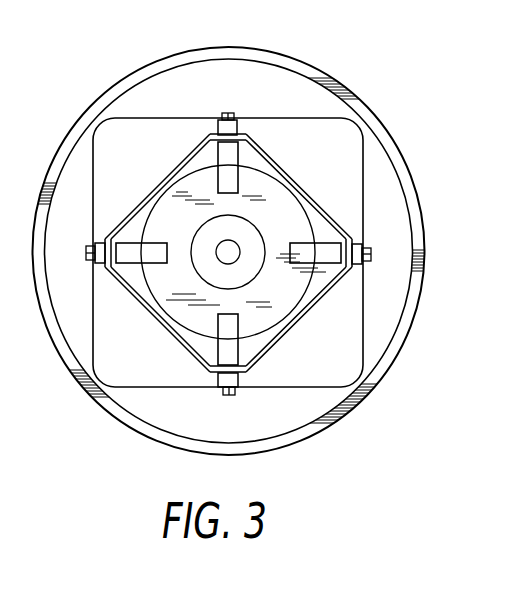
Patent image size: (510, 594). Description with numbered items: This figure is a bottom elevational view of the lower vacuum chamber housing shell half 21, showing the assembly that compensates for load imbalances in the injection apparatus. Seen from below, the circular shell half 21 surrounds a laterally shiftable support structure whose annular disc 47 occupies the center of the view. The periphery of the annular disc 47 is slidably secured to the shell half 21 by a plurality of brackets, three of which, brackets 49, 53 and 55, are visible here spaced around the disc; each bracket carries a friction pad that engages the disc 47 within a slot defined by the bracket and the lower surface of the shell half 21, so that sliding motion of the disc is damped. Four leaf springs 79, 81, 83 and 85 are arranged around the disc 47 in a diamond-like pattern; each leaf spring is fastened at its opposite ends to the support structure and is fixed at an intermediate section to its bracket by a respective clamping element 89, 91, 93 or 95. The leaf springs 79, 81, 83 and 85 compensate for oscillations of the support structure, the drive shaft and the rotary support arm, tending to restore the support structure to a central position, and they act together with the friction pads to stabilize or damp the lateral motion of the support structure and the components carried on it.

The vacuum chamber shell half 21 is at (393, 318).
The annular disc 47 is at (290, 207).
The bracket 49 is at (130, 228).
The bracket 53 is at (323, 242).
The bracket 55 is at (228, 350).
The leaf spring 79 is at (126, 286).
The leaf spring 81 is at (201, 157).
The leaf spring 83 is at (316, 292).
The leaf spring 85 is at (281, 334).
The clamping element 89 is at (94, 262).
The clamping element 91 is at (221, 127).
The clamping element 93 is at (362, 248).
The clamping element 95 is at (243, 386).